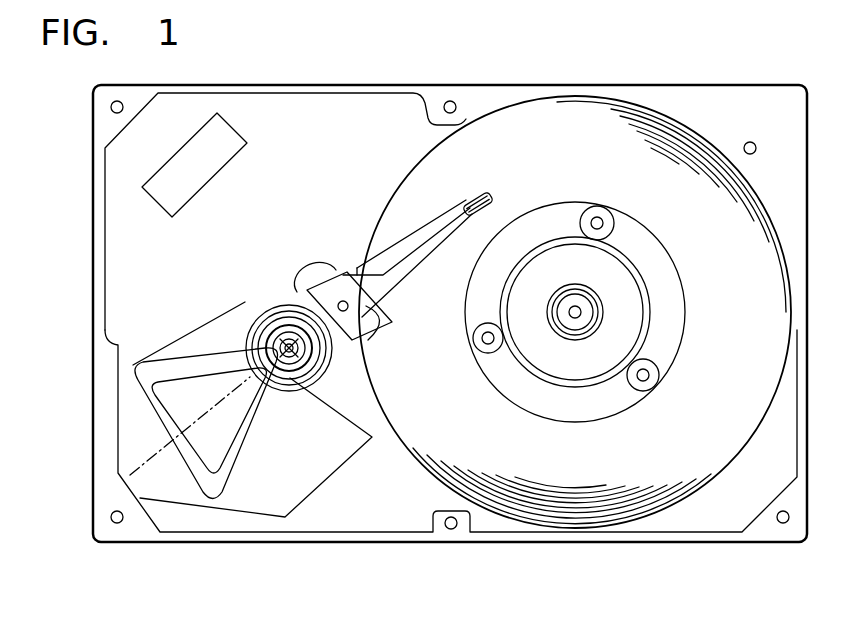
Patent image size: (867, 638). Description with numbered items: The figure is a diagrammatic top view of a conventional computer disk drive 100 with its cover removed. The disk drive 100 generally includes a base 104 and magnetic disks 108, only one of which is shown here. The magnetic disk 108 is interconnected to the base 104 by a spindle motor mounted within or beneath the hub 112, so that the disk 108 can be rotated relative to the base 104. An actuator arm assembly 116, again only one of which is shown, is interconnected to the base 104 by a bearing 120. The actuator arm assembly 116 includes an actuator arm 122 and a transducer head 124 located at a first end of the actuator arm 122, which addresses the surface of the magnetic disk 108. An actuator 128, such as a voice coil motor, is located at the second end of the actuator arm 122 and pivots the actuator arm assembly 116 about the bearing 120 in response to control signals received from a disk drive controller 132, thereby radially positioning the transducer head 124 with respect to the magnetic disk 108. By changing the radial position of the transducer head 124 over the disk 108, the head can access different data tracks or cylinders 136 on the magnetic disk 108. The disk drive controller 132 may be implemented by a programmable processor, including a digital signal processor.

The computer disk drive 100 is at (673, 73).
The base 104 is at (392, 508).
The magnetic disk 108 is at (592, 493).
The hub 112 is at (585, 303).
The actuator arm assembly 116 is at (434, 216).
The bearing 120 is at (276, 335).
The actuator arm 122 is at (366, 268).
The transducer head 124 is at (478, 193).
The actuator 128 is at (140, 392).
The disk drive controller 132 is at (162, 198).
The data tracks or cylinders 136 is at (565, 513).